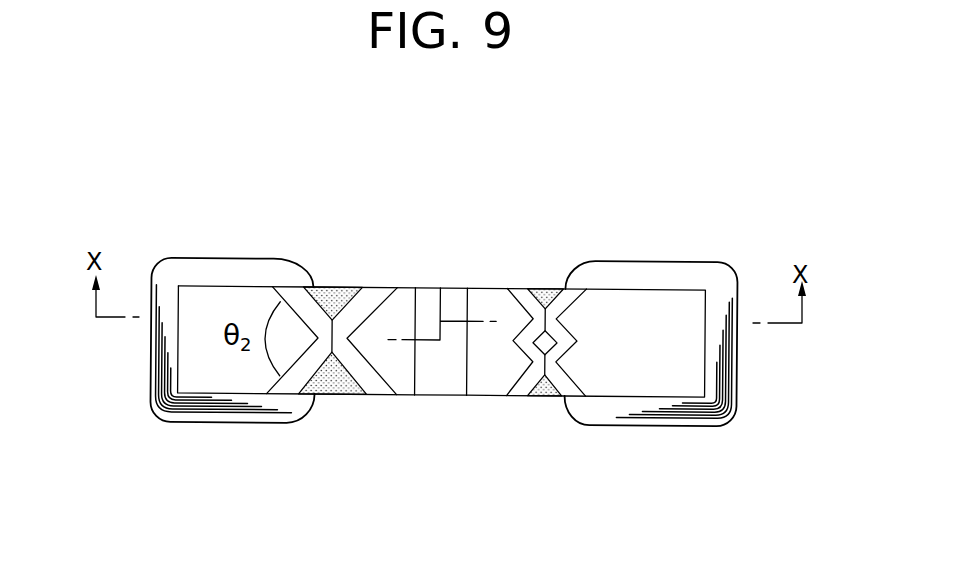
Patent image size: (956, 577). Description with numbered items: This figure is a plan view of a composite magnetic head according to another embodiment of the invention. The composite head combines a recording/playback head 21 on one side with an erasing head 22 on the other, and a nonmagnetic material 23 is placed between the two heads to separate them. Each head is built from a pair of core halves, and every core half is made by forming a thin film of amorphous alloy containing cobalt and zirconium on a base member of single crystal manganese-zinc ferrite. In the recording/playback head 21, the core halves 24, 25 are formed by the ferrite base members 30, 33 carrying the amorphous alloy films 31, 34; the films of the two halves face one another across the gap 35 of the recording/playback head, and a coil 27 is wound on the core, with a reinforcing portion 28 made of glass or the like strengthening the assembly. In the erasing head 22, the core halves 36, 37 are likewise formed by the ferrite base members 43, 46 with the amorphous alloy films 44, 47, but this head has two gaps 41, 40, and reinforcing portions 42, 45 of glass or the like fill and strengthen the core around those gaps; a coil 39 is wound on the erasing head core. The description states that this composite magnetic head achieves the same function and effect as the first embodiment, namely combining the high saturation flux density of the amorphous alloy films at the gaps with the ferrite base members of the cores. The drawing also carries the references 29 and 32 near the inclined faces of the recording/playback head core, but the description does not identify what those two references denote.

The recording/playback head 21 is at (186, 209).
The erasing head 22 is at (707, 206).
The nonmagnetic material 23 is at (440, 288).
The core half 24 is at (303, 194).
The core half 25 is at (332, 197).
The coil 27 is at (223, 413).
The reinforcing portion 28 is at (336, 385).
The neck portion 29 is at (307, 337).
The Mn-Zn ferrite base member 30 is at (228, 297).
The amorphous alloy film 31 is at (294, 300).
The second inclined face 32 is at (388, 376).
The Mn-Zn ferrite base member 33 is at (403, 302).
The amorphous alloy film 34 is at (377, 302).
The gap of the recording/playback head 35 is at (333, 305).
The core half 36 is at (463, 197).
The core half 37 is at (697, 198).
The coil 39 is at (687, 428).
The gap of the erasing head 40 is at (541, 398).
The gap of the erasing head 41 is at (545, 310).
The reinforcing portion 42 is at (531, 397).
The Mn-Zn ferrite base member 43 is at (494, 300).
The amorphous alloy film 44 is at (517, 300).
The reinforcing portion 45 is at (548, 346).
The Mn-Zn ferrite base member 46 is at (675, 315).
The amorphous alloy film 47 is at (577, 298).